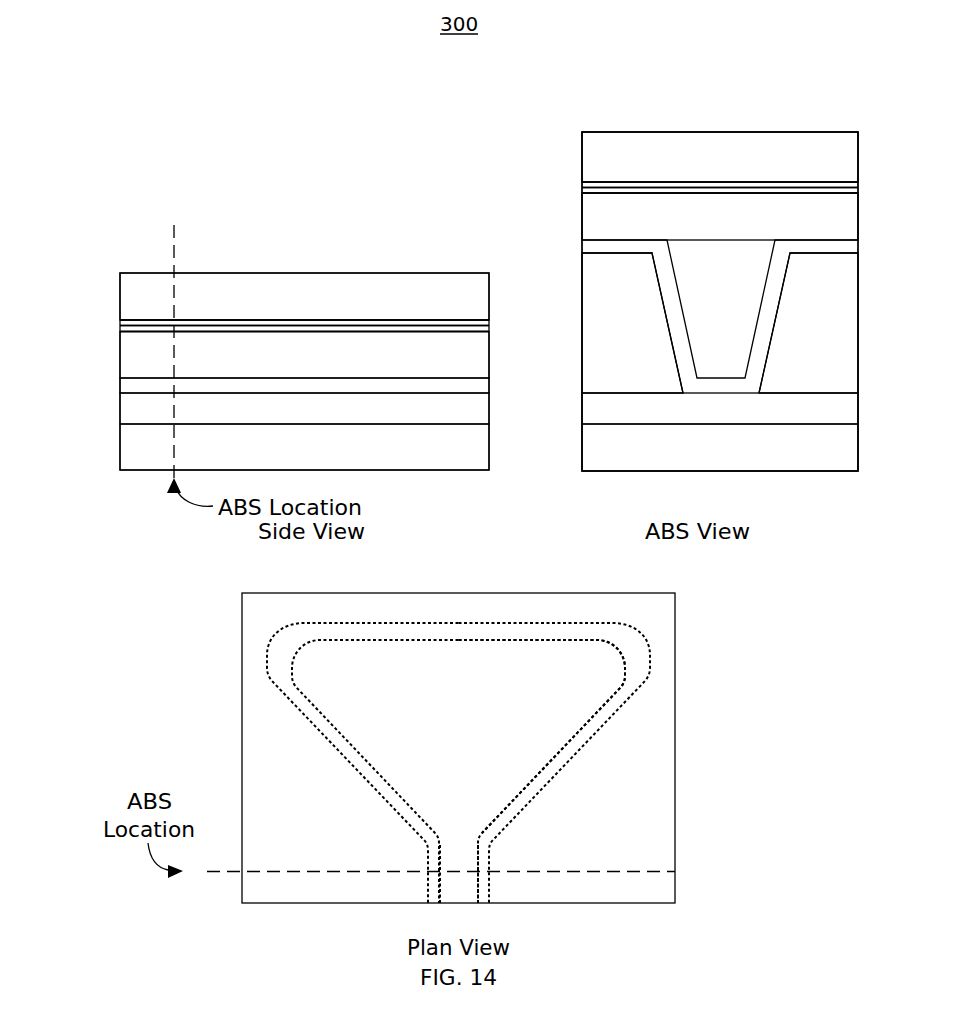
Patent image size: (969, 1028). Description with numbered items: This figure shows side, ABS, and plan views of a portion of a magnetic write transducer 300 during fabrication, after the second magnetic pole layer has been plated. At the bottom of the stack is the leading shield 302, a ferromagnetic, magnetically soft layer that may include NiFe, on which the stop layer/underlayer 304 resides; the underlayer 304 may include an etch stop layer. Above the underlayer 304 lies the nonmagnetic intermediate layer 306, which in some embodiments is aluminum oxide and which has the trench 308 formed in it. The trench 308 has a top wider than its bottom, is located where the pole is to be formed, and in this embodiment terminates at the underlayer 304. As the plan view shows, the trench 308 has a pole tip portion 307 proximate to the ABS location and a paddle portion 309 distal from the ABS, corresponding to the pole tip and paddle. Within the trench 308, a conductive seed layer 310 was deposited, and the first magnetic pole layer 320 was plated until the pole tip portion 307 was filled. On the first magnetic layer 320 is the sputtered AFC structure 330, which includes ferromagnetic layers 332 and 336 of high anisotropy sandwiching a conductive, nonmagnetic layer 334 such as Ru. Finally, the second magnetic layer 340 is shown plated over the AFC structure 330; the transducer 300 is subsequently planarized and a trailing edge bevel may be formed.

The transducer 300 is at (478, 34).
The leading shield 302 is at (120, 437).
The stop layer/underlayer 304 is at (582, 408).
The nonmagnetic intermediate layer 306 is at (582, 356).
The pole tip portion 307 is at (537, 886).
The trench 308 is at (715, 48).
The paddle portion 309 is at (636, 770).
The seed layer 310 is at (120, 386).
The first magnetic pole layer 320 is at (120, 365).
The AFC structure 330 is at (110, 321).
The ferromagnetic layer 332 is at (197, 330).
The conductive nonmagnetic layer 334 is at (260, 325).
The ferromagnetic layer 336 is at (313, 318).
The second magnetic layer 340 is at (397, 273).